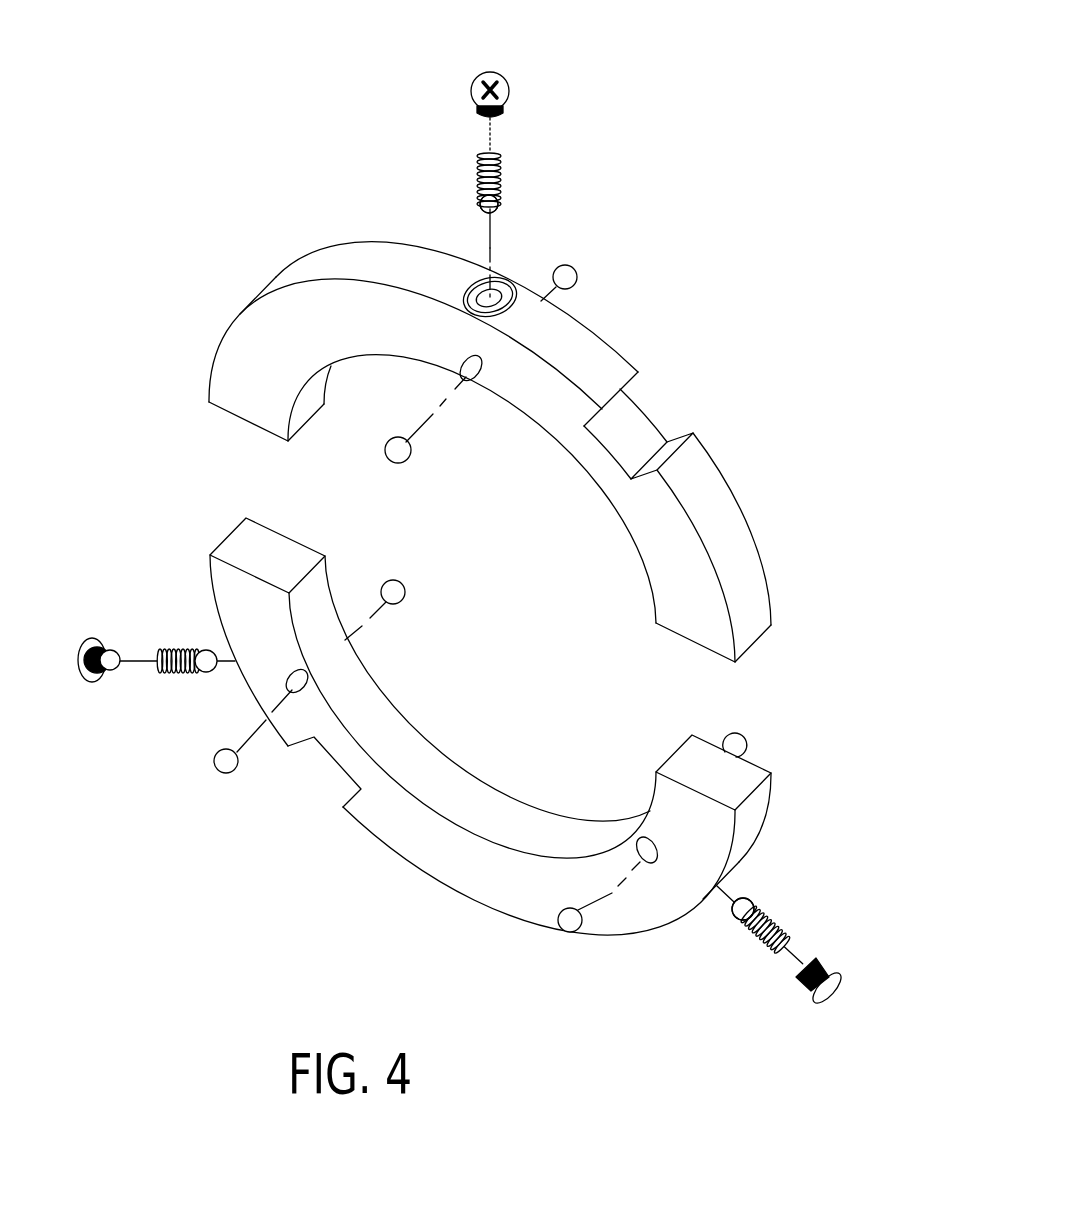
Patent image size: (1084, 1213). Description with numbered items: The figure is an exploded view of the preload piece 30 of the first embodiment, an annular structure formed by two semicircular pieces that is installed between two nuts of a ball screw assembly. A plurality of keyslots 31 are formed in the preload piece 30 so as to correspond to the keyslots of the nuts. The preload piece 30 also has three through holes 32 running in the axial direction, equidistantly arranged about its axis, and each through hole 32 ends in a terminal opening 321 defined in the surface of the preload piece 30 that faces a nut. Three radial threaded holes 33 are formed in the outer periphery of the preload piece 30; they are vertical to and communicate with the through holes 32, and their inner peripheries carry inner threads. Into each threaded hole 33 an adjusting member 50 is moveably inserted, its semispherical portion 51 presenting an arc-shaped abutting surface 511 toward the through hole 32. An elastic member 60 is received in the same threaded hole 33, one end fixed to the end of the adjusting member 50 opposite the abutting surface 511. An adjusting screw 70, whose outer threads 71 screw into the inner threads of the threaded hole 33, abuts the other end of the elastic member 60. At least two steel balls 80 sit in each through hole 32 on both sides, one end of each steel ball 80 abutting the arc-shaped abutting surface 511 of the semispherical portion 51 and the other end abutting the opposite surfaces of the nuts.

The preload piece 30 is at (684, 540).
The keyslot 31 is at (623, 427).
The through hole 32 is at (622, 833).
The terminal opening 321 is at (658, 857).
The radial threaded hole 33 is at (515, 288).
The adjusting member 50 is at (523, 180).
The semispherical portion 51 is at (503, 204).
The arc-shaped abutting surface 511 is at (466, 224).
The elastic member 60 is at (502, 162).
The adjusting screw 70 is at (507, 83).
The outer threads 71 is at (827, 968).
The steel ball 80 is at (566, 932).